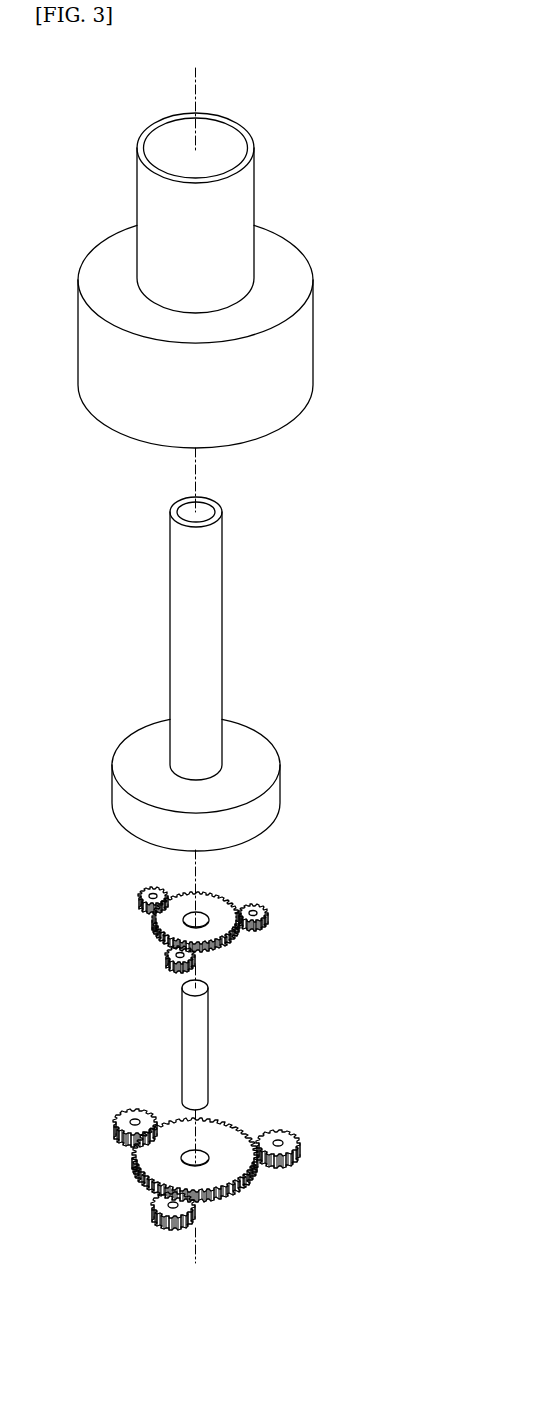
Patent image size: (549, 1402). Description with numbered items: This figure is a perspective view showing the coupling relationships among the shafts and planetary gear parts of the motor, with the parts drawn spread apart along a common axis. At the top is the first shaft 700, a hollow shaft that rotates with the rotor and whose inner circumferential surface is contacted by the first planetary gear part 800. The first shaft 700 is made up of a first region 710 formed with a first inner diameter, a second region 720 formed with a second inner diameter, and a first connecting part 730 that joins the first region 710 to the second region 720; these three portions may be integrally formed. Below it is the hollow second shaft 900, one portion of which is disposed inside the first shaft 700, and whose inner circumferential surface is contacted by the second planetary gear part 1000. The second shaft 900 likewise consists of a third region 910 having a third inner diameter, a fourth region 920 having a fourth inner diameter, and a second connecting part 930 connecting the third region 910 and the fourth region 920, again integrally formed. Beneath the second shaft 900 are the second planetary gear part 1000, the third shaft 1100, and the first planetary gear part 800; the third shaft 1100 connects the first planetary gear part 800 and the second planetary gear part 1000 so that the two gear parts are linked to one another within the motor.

The first shaft 700 is at (279, 280).
The first region 710 is at (246, 196).
The second region 720 is at (249, 361).
The first connecting part 730 is at (278, 257).
The second shaft 900 is at (274, 674).
The third region 910 is at (203, 683).
The fourth region 920 is at (244, 808).
The second connecting part 930 is at (252, 750).
The second planetary gear part 1000 is at (275, 906).
The third shaft 1100 is at (217, 1036).
The first planetary gear part 800 is at (309, 1131).